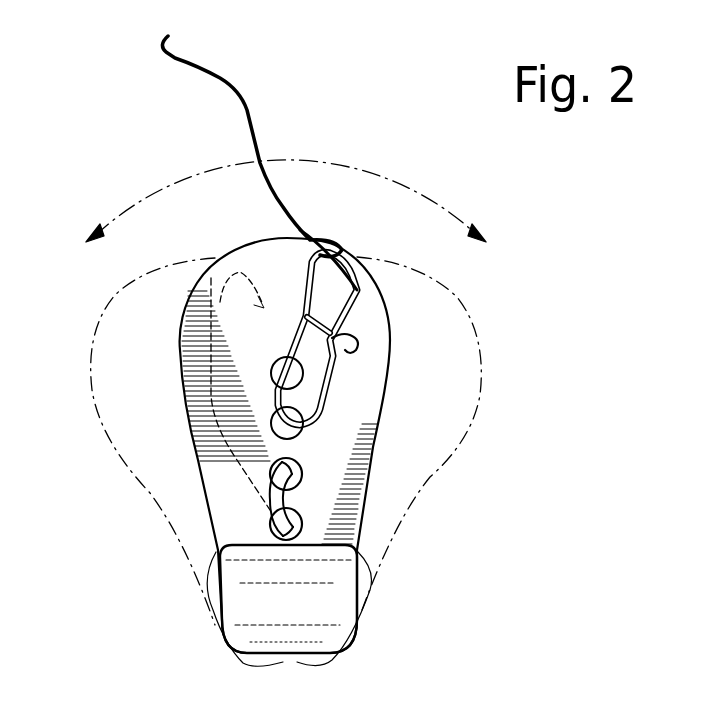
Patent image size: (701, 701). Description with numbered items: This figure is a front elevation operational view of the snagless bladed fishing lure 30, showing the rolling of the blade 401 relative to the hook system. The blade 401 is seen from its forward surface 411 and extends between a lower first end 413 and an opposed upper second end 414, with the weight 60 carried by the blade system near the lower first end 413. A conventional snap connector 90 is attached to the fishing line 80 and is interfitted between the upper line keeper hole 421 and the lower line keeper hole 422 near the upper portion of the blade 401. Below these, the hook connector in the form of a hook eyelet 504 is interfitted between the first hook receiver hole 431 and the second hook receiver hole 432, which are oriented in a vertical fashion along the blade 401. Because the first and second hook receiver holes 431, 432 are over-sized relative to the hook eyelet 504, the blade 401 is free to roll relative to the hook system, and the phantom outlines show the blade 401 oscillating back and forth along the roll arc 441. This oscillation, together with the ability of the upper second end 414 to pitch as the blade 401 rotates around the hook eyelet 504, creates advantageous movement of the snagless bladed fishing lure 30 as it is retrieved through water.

The snagless bladed fishing lure 30 is at (118, 158).
The fishing line 80 is at (245, 98).
The roll arc 441 is at (338, 163).
The upper second end 414 is at (263, 268).
The forward surface 411 is at (300, 294).
The snap connector 90 is at (350, 290).
The blade 401 is at (377, 341).
The upper line keeper hole 421 is at (270, 368).
The lower line keeper hole 422 is at (270, 427).
The first hook receiver hole 431 is at (303, 470).
The second hook receiver hole 432 is at (302, 518).
The hook eyelet 504 is at (273, 520).
The lower first end 413 is at (232, 592).
The weight 60 is at (320, 603).